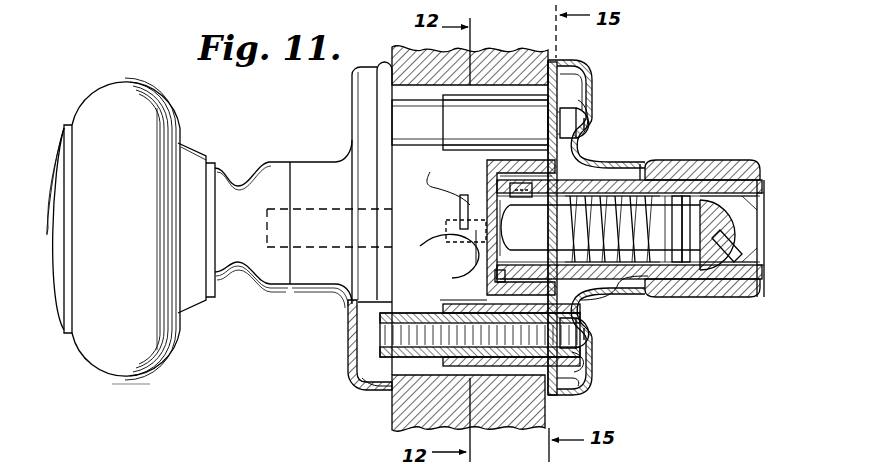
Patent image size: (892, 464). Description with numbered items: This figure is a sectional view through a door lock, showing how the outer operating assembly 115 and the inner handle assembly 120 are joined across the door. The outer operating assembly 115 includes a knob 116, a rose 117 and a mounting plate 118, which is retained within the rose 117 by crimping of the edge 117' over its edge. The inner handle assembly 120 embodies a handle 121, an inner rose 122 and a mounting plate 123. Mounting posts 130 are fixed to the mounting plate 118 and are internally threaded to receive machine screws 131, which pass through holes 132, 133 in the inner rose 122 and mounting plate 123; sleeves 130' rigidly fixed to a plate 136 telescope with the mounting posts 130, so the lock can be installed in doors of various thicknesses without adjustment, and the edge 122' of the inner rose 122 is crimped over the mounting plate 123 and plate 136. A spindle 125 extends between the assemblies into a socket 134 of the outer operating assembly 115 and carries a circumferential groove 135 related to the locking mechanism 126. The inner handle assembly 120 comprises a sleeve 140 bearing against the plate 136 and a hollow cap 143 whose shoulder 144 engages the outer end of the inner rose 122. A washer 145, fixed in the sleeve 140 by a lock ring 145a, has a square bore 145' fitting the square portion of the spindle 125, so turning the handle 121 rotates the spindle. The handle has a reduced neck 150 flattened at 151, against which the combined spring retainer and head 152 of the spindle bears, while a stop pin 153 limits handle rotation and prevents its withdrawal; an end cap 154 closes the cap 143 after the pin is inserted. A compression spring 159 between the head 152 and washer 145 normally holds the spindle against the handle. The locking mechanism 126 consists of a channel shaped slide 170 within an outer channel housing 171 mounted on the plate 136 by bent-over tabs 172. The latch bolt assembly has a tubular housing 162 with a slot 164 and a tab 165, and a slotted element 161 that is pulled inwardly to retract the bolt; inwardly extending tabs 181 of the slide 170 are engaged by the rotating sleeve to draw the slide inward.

The outer operating assembly 115 is at (84, 90).
The knob 116 is at (145, 372).
The rose 117 is at (355, 181).
The edge of rose 117' is at (363, 399).
The mounting plate 118 is at (348, 380).
The inner handle assembly 120 is at (720, 178).
The handle 121 is at (760, 190).
The inner rose 122 is at (596, 105).
The edge of inner rose 122' is at (596, 351).
The mounting plate 123 is at (590, 86).
The spindle 125 is at (444, 262).
The locking mechanism 126 is at (486, 175).
The mounting posts 130 is at (430, 122).
The sleeves 130' is at (495, 122).
The machine screws 131 is at (596, 122).
The hole 132 is at (592, 112).
The hole 133 is at (584, 364).
The socket 134 is at (324, 250).
The circumferential groove 135 is at (512, 220).
The plate 136 is at (582, 382).
The sleeve 140 is at (684, 160).
The hollow cap 143 is at (710, 296).
The shoulder 144 is at (642, 290).
The washer 145 is at (612, 229).
The lock ring 145a is at (580, 219).
The square bore 145' is at (580, 239).
The reduced neck 150 is at (752, 208).
The flat face 151 is at (682, 218).
The combined spring retainer and head 152 is at (674, 238).
The stop pin 153 is at (742, 256).
The end cap 154 is at (764, 185).
The compression spring 159 is at (642, 178).
The slotted element 161 is at (476, 266).
The tubular housing 162 is at (436, 182).
The slot 164 is at (448, 231).
The tab 165 is at (462, 210).
The channel shaped slide 170 is at (500, 296).
The outer channel housing 171 is at (494, 278).
The tabs 172 is at (590, 146).
The inwardly extending tabs 181 is at (509, 188).